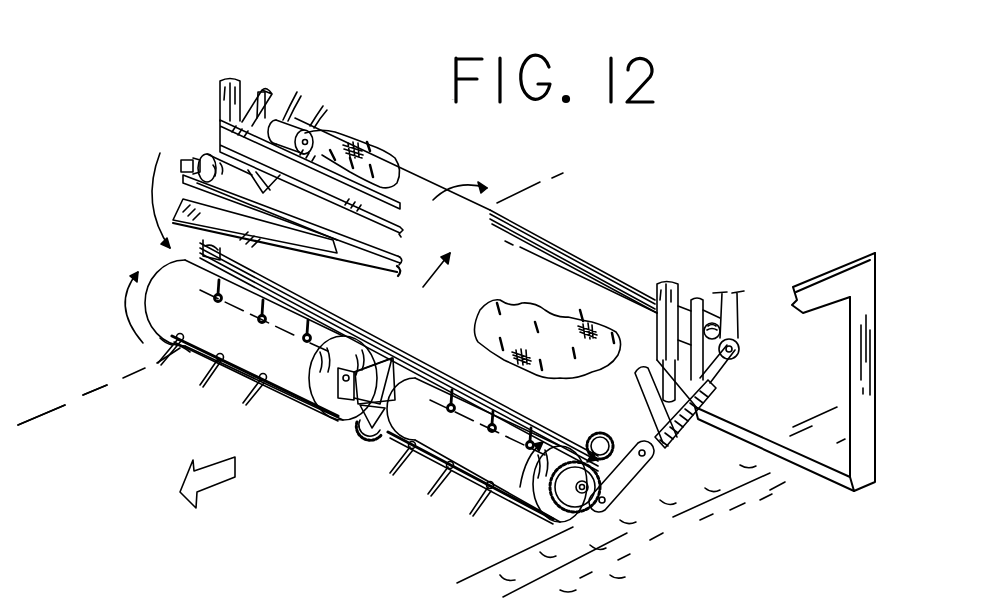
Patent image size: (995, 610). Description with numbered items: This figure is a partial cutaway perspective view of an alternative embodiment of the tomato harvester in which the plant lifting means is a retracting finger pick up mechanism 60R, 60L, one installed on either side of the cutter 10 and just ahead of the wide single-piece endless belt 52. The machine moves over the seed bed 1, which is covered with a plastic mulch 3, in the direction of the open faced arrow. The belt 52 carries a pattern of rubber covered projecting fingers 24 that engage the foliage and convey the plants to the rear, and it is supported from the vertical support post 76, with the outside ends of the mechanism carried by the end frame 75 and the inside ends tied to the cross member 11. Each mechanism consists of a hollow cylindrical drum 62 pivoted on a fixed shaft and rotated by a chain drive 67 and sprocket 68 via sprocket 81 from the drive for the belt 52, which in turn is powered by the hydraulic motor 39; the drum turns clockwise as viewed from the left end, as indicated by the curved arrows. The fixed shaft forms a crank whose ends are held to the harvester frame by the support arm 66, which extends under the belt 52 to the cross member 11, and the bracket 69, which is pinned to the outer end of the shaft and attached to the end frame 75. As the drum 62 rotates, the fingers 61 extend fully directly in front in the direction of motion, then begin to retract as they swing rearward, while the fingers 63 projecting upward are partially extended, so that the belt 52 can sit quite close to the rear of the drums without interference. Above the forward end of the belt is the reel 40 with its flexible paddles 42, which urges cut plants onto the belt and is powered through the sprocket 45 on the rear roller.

The seed bed 1 is at (82, 413).
The plastic mulch 3 is at (62, 405).
The cutter assembly 10 is at (364, 434).
The cross member 11 is at (830, 476).
The fingers 24 is at (537, 338).
The hydraulic motor 39 is at (290, 102).
The reel 40 is at (168, 151).
The paddles 42 is at (399, 357).
The sprocket 45 is at (739, 353).
The endless belt 52 is at (566, 255).
The retracting finger pick up mechanism 60R is at (186, 371).
The retracting finger pick up mechanism 60L is at (365, 505).
The fingers 61 is at (240, 407).
The hollow cylindrical drum 62 is at (300, 384).
The fingers 63 is at (280, 333).
The support arm 66 is at (354, 410).
The chain drive 67 is at (597, 450).
The sprocket 68 is at (581, 517).
The bracket 69 is at (640, 474).
The end frame 75 is at (697, 412).
The vertical support post 76 is at (220, 95).
The sprocket 81 is at (613, 428).